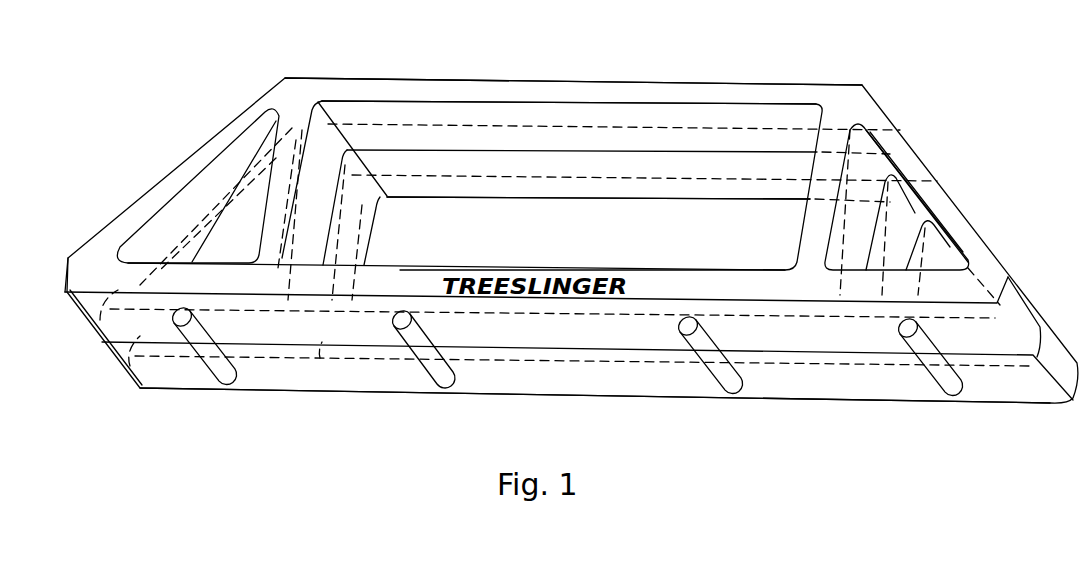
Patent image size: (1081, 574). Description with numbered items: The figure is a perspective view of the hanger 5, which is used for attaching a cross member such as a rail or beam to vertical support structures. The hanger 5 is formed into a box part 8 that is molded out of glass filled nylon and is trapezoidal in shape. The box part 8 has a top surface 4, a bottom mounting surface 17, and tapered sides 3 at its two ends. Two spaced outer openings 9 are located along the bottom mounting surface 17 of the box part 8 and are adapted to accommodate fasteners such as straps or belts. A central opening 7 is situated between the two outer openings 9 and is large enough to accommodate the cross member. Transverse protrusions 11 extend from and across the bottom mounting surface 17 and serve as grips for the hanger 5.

The tapered sides 3 is at (230, 135).
The top surface 4 is at (582, 96).
The hanger 5 is at (437, 96).
The central opening 7 is at (602, 232).
The box part 8 is at (853, 105).
The outer openings 9 is at (237, 246).
The transverse protrusions 11 is at (207, 378).
The bottom mounting surface 17 is at (663, 400).